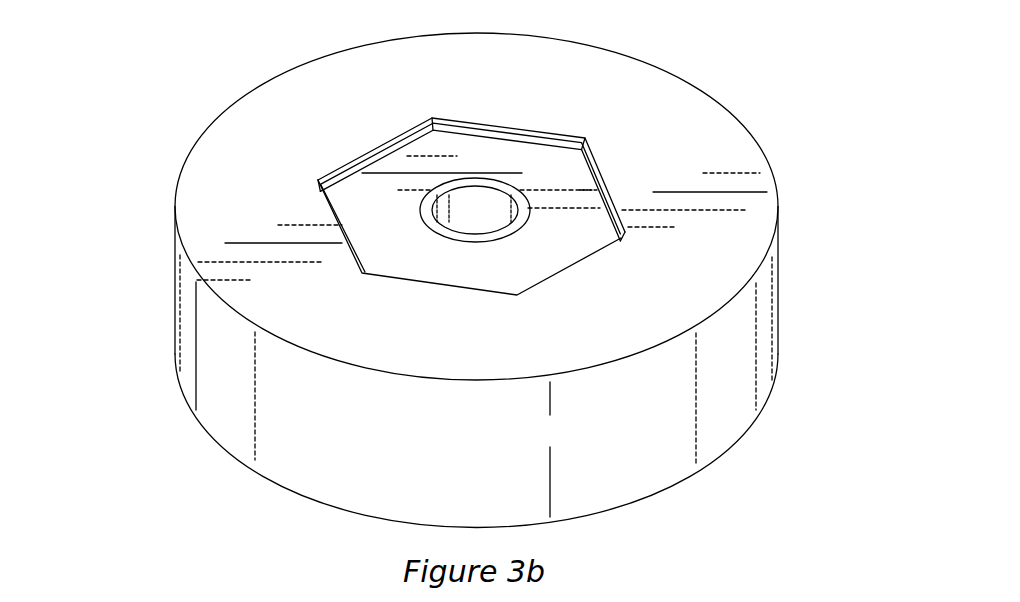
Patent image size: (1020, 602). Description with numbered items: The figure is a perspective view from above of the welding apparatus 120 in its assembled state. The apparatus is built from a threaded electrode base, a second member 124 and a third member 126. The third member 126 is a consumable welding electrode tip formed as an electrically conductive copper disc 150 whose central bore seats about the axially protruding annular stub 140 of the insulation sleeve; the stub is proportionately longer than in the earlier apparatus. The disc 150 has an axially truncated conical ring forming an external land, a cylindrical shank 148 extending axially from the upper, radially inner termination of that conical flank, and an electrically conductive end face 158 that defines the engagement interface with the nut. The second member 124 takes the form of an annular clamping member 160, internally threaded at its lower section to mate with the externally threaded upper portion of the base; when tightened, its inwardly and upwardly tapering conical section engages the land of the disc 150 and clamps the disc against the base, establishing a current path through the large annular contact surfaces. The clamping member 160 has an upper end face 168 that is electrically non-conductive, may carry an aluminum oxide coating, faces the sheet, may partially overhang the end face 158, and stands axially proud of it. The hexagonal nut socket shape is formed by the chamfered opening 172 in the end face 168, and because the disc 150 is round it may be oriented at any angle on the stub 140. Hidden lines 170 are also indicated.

The welding apparatus 120 is at (712, 92).
The second member 124 is at (353, 197).
The third member 126 is at (393, 162).
The annular stub 140 is at (605, 203).
The cylindrical shank 148 is at (588, 225).
The copper disc 150 is at (538, 257).
The end face 158 is at (353, 195).
The clamping member 160 is at (188, 337).
The upper end face 168 is at (213, 279).
The coolant channel 170 is at (203, 243).
The opening 172 is at (233, 117).